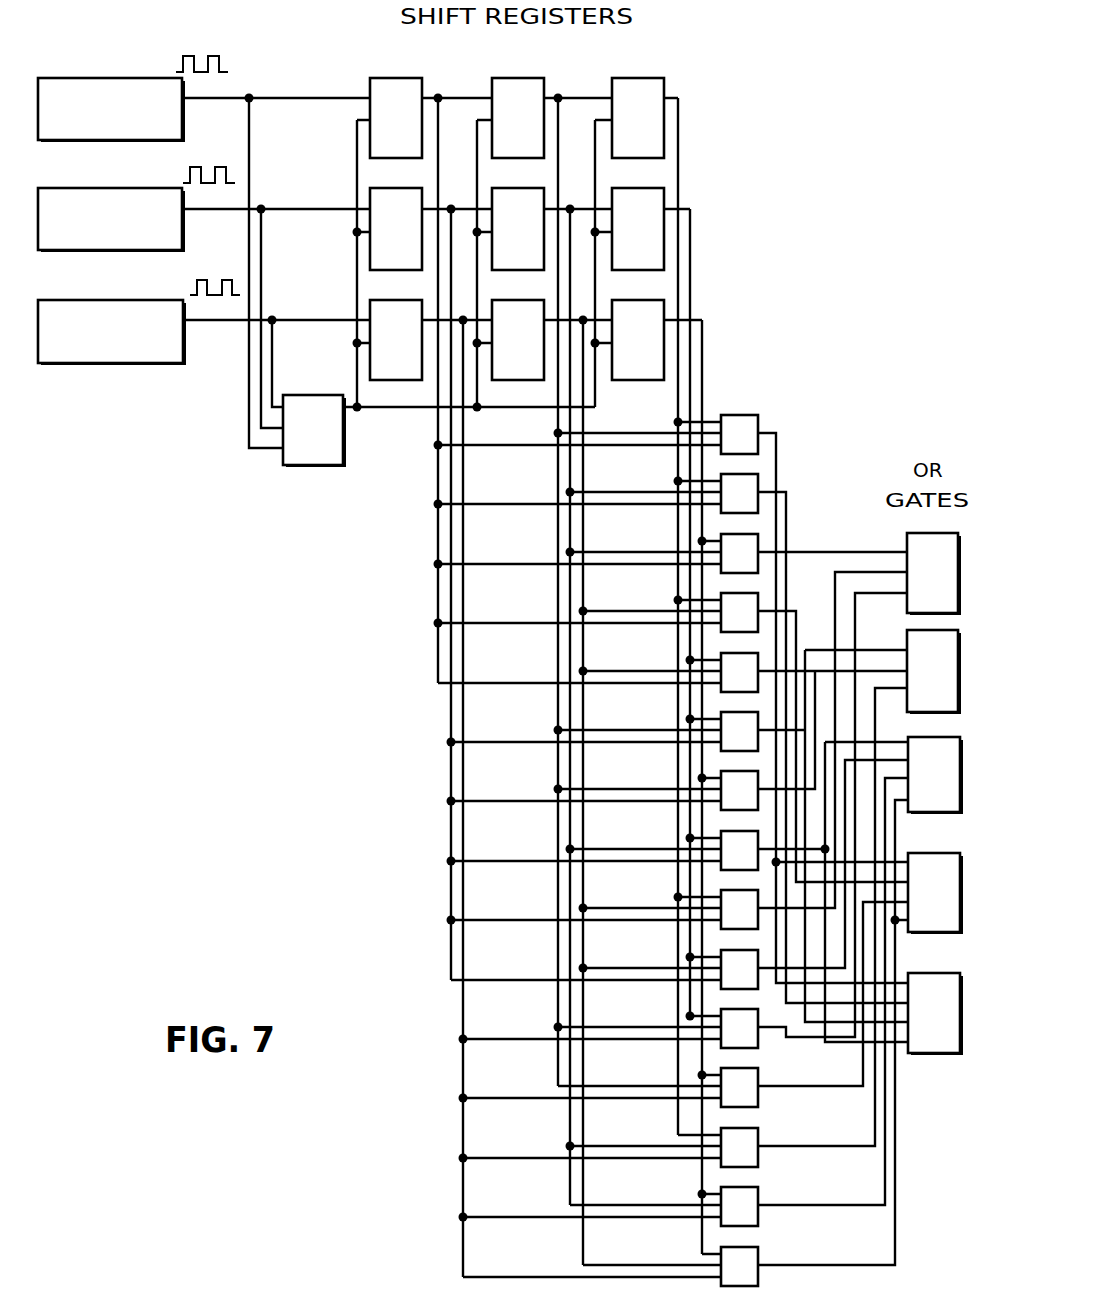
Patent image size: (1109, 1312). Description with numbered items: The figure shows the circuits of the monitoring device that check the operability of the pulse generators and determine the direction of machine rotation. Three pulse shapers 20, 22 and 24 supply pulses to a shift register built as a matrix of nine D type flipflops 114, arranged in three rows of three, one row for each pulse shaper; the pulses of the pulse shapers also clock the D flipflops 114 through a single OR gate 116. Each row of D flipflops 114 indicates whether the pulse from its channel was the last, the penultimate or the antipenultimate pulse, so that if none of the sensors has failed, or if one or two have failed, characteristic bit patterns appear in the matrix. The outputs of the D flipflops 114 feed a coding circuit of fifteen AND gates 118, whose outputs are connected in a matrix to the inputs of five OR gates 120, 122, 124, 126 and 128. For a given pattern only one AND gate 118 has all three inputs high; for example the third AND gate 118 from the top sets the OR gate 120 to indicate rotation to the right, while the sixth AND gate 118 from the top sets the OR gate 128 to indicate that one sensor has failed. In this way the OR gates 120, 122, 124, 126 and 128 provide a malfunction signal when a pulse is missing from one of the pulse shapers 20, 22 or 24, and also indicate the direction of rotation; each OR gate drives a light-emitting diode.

The pulse shaper 20 is at (107, 76).
The pulse shaper 22 is at (107, 187).
The pulse shaper 24 is at (107, 299).
The D type flipflops 114 is at (381, 77).
The OR gate 116 is at (332, 468).
The AND gates 118 is at (763, 395).
The OR gate 120 is at (906, 545).
The OR gate 122 is at (908, 643).
The OR gate 124 is at (933, 813).
The OR gate 126 is at (931, 933).
The OR gate 128 is at (960, 1055).